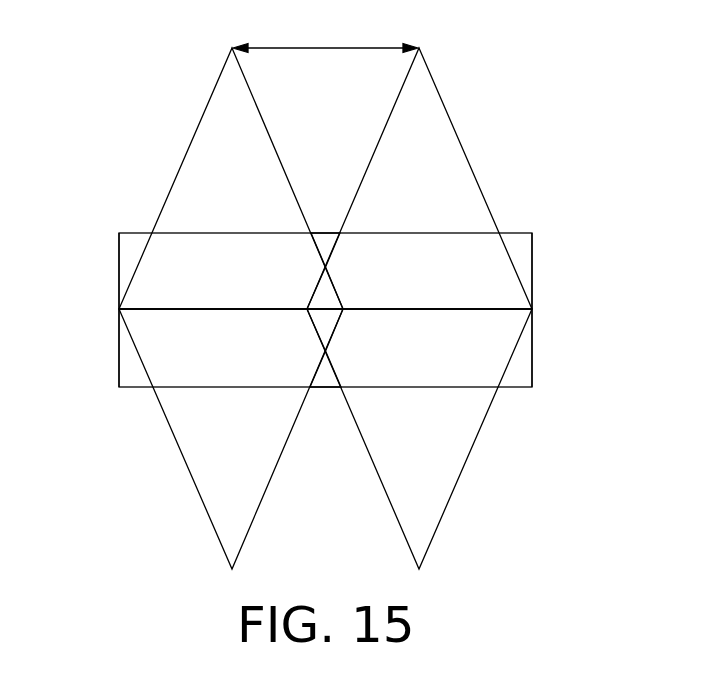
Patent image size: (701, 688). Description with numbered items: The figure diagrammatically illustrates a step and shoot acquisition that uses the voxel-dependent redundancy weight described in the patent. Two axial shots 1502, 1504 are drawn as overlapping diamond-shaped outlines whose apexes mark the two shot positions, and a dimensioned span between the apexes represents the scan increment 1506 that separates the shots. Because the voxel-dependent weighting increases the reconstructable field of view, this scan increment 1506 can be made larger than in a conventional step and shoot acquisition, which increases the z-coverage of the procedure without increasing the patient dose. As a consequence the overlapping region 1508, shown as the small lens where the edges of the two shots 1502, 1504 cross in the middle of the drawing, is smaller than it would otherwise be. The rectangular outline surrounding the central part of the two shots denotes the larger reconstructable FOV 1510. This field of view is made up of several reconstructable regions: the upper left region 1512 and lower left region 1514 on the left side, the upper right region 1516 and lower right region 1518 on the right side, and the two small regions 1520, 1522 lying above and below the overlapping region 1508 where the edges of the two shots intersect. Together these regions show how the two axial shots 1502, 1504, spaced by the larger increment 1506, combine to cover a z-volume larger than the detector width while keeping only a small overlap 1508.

The axial shot 1502 is at (222, 41).
The axial shot 1504 is at (429, 41).
The scan increment 1506 is at (290, 47).
The overlapping region 1508 is at (297, 271).
The reconstructable FOV 1510 is at (119, 233).
The reconstructable region 1512 is at (130, 247).
The reconstructable region 1514 is at (130, 365).
The reconstructable region 1516 is at (520, 247).
The reconstructable region 1518 is at (520, 365).
The reconstructable region 1520 is at (326, 243).
The reconstructable region 1522 is at (326, 376).